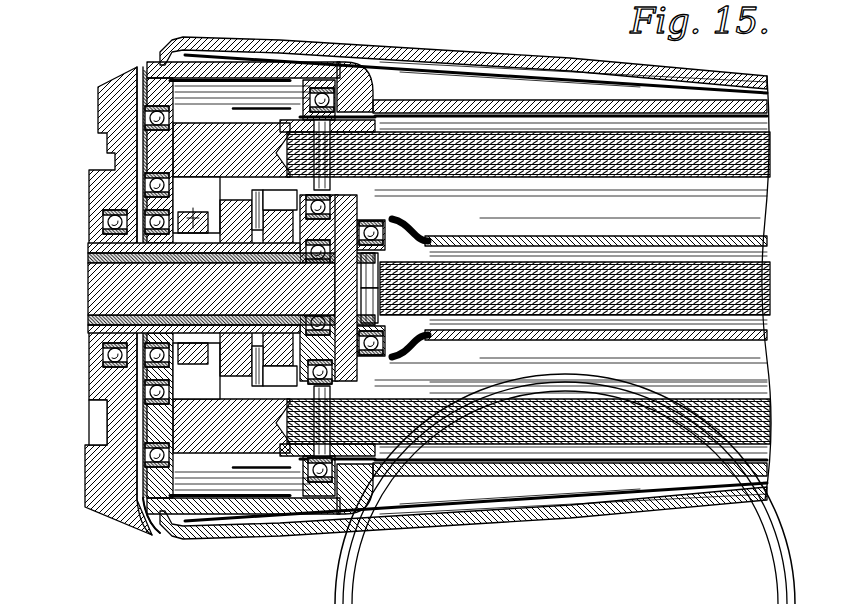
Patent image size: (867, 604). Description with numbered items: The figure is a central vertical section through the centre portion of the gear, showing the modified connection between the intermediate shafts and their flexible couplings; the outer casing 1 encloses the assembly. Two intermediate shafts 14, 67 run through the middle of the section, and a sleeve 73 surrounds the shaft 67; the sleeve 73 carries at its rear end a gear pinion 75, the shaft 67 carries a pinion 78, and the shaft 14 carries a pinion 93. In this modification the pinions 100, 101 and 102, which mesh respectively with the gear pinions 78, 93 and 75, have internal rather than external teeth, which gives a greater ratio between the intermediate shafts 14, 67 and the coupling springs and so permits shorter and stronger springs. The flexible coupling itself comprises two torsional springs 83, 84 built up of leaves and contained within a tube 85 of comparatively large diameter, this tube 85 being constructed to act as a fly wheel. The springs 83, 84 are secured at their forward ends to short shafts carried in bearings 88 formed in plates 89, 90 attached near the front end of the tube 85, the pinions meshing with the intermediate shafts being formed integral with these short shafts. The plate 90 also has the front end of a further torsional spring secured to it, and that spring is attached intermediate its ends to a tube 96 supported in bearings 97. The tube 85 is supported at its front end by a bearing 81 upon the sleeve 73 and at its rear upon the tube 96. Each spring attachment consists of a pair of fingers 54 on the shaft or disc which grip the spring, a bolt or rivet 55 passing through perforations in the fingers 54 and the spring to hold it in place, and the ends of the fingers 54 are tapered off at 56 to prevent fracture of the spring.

The housing 1 is at (102, 500).
The intermediate shaft 14 is at (88, 260).
The fingers 54 is at (411, 22).
The bolt or rivet 55 is at (320, 95).
The tapered ends of fingers 56 is at (395, 395).
The intermediate shaft 67 is at (108, 292).
The sleeve 73 is at (90, 328).
The gear pinion 75 is at (193, 206).
The pinion 78 is at (270, 210).
The bearing 81 is at (92, 401).
The torsional spring 83 is at (482, 133).
The torsional spring 84 is at (598, 413).
The tube 85 is at (543, 477).
The bearings 88 is at (143, 65).
The plate 89 is at (163, 70).
The plate 90 is at (377, 132).
The pinion 93 is at (205, 495).
The tube 96 is at (527, 237).
The bearings 97 is at (437, 117).
The pinion 100 is at (278, 400).
The pinion 101 is at (238, 190).
The pinion 102 is at (167, 533).